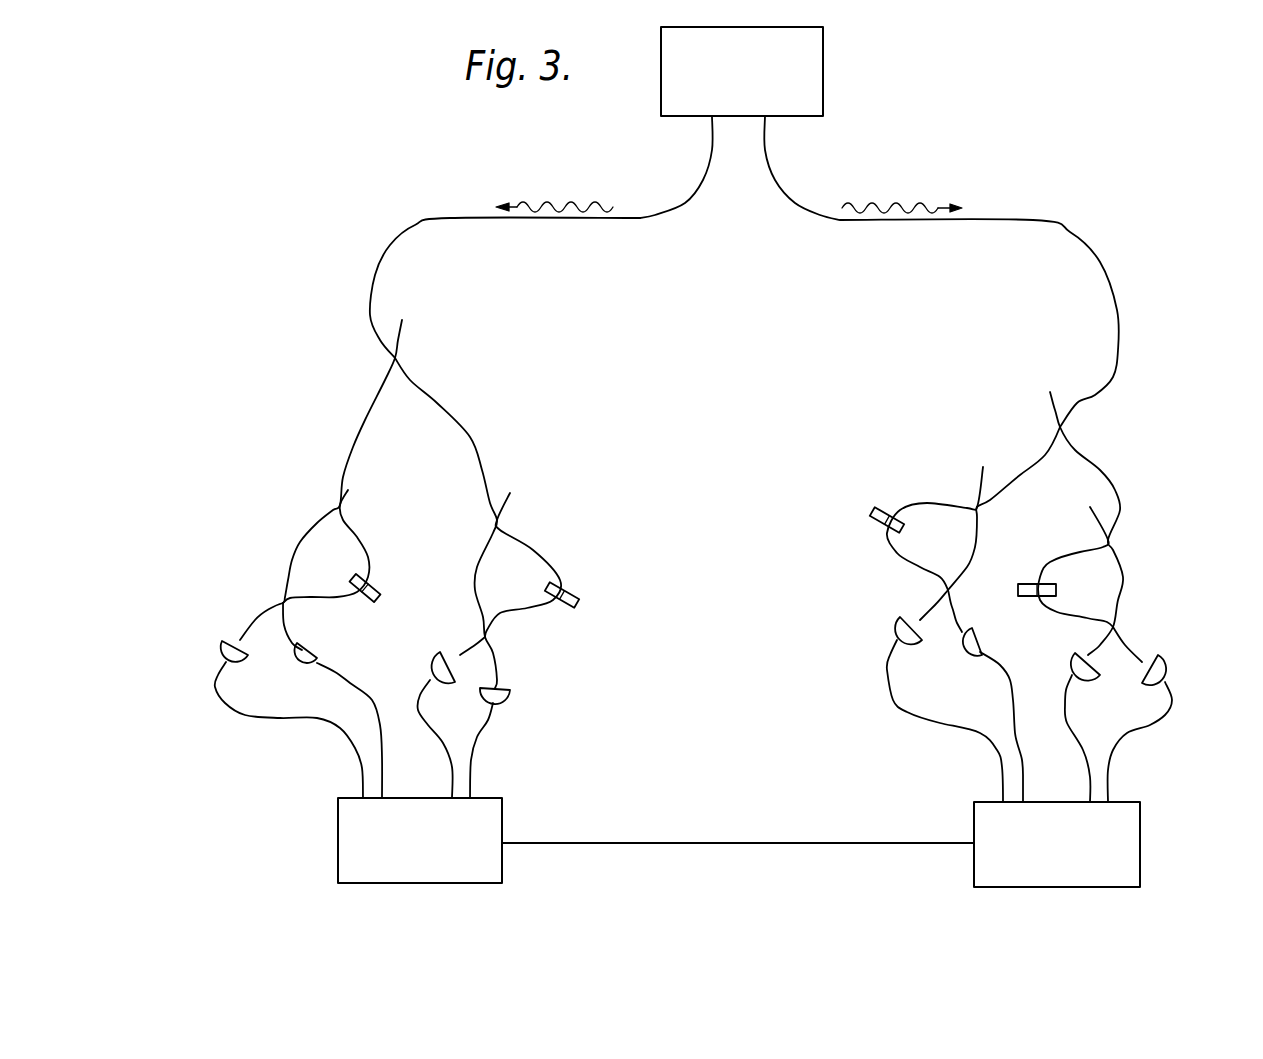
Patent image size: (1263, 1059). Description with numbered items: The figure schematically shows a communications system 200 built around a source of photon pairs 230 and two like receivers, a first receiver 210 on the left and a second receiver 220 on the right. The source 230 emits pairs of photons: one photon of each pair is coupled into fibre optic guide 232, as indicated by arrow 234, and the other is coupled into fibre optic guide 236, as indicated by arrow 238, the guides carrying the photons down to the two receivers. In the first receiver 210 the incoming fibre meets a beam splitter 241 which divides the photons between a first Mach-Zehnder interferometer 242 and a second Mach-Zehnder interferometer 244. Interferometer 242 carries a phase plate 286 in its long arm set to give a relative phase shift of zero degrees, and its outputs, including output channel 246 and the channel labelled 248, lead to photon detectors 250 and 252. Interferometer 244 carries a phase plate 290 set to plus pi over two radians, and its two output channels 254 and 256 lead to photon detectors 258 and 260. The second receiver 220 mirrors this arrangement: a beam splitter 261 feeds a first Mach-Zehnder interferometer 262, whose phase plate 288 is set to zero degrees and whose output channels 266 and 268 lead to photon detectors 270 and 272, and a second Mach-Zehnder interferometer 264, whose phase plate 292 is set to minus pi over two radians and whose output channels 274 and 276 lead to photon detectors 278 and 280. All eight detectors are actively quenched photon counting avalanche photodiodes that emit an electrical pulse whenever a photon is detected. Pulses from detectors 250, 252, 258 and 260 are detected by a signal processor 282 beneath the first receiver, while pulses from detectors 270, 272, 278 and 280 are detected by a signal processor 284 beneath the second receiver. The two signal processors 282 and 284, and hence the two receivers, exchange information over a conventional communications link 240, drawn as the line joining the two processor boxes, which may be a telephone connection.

The communications system 200 is at (1084, 217).
The first receiver 210 is at (506, 476).
The second receiver 220 is at (919, 489).
The source of photon pairs 230 is at (823, 62).
The fibre optic guide 232 is at (638, 218).
The arrow 234 is at (550, 205).
The fibre optic guide 236 is at (913, 220).
The arrow 238 is at (898, 205).
The conventional communications link 240 is at (683, 842).
The beam splitter 241 is at (398, 362).
The first Mach-Zehnder interferometer 242 is at (548, 568).
The second Mach-Zehnder interferometer 244 is at (343, 527).
The output channel 246 is at (495, 668).
The coupler output fiber 248 is at (465, 652).
The photon detector 250 is at (507, 702).
The photon detector 252 is at (430, 665).
The output channel 254 is at (283, 625).
The output channel 256 is at (248, 623).
The photon detector 258 is at (300, 665).
The photon detector 260 is at (215, 655).
The beam splitter 261 is at (1057, 424).
The first Mach-Zehnder interferometer 262 is at (898, 553).
The second Mach-Zehnder interferometer 264 is at (1120, 568).
The output channel 266 is at (935, 610).
The output channel 268 is at (955, 617).
The photon detector 270 is at (895, 628).
The photon detector 272 is at (965, 655).
The output channel 274 is at (1097, 648).
The output channel 276 is at (1128, 650).
The photon detector 278 is at (1097, 677).
The photon detector 280 is at (1168, 667).
The signal processor 282 is at (502, 815).
The signal processor 284 is at (974, 805).
The phase plate 286 is at (583, 595).
The phase plate 288 is at (870, 520).
The phase plate 290 is at (377, 587).
The phase plate 292 is at (1023, 583).